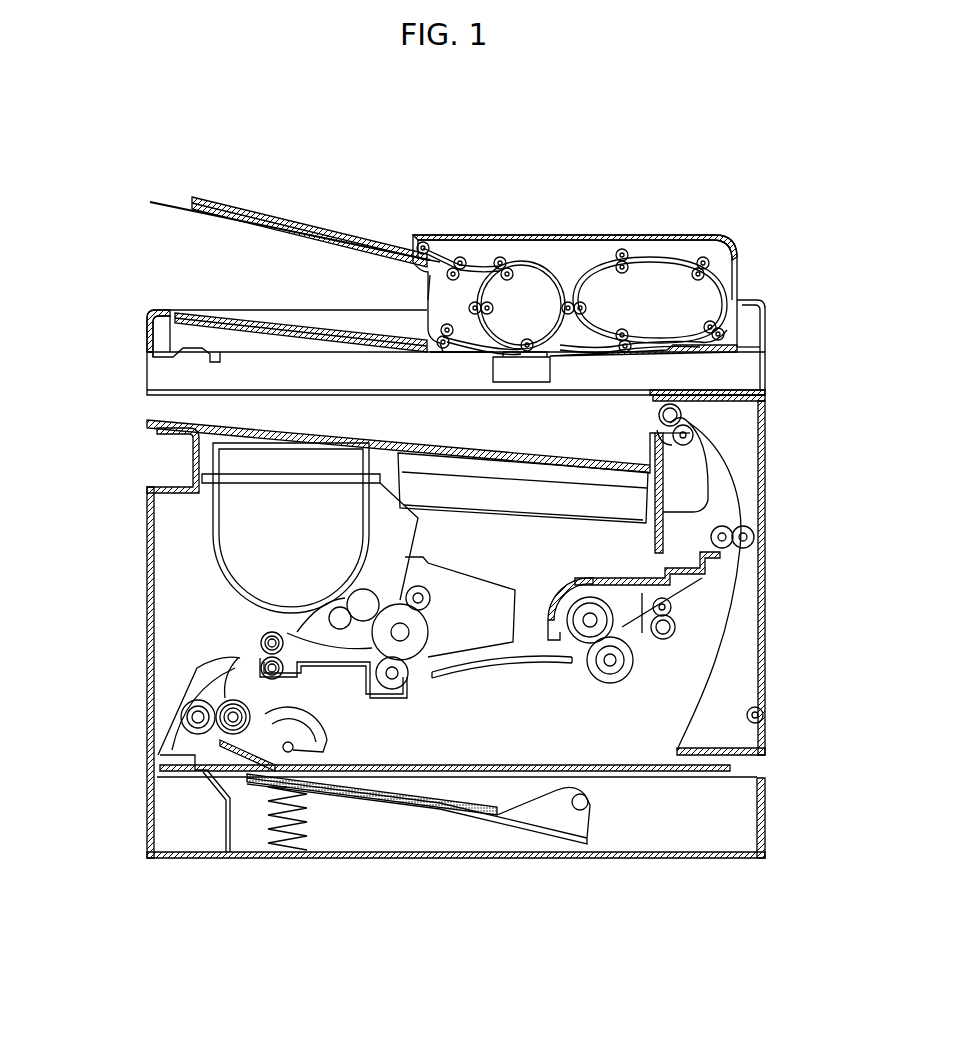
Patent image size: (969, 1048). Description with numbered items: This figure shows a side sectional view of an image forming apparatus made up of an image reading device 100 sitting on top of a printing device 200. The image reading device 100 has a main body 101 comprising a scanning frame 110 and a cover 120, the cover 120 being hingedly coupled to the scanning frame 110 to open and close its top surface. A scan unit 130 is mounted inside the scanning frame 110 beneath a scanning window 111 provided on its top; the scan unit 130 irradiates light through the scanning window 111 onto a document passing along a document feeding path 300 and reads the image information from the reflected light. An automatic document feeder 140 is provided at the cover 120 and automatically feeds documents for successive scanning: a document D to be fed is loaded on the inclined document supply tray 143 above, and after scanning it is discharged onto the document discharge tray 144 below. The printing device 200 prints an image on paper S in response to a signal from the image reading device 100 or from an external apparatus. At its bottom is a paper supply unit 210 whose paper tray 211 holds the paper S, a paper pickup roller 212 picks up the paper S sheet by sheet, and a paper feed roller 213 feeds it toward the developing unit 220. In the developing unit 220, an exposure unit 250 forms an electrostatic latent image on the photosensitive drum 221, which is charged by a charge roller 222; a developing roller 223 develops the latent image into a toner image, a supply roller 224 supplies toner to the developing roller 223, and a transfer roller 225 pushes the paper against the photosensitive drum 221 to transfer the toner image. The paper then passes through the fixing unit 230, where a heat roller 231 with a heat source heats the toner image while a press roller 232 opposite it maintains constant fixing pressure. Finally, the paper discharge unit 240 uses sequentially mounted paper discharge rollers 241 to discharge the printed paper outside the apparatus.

The image reading device 100 is at (140, 284).
The main body 101 is at (843, 318).
The scanning frame 110 is at (762, 372).
The cover 120 is at (762, 323).
The scanning window 111 is at (518, 363).
The scan unit 130 is at (551, 368).
The automatic document feeder 140 is at (442, 221).
The document supply tray 143 is at (168, 202).
The document discharge tray 144 is at (188, 308).
The document feeding path 300 is at (562, 263).
The document D is at (277, 208).
The printing device 200 is at (140, 470).
The paper supply unit 210 is at (355, 803).
The paper tray 211 is at (457, 815).
The paper pickup roller 212 is at (327, 738).
The paper feed roller 213 is at (245, 705).
The paper S is at (462, 792).
The developing unit 220 is at (207, 573).
The photosensitive drum 221 is at (428, 630).
The charge roller 222 is at (431, 590).
The developing roller 223 is at (363, 590).
The supply roller 224 is at (275, 635).
The transfer roller 225 is at (407, 683).
The fixing unit 230 is at (580, 667).
The heat roller 231 is at (587, 588).
The press roller 232 is at (608, 681).
The paper discharge unit 240 is at (738, 553).
The paper discharge rollers 241 is at (658, 415).
The exposure unit 250 is at (527, 508).